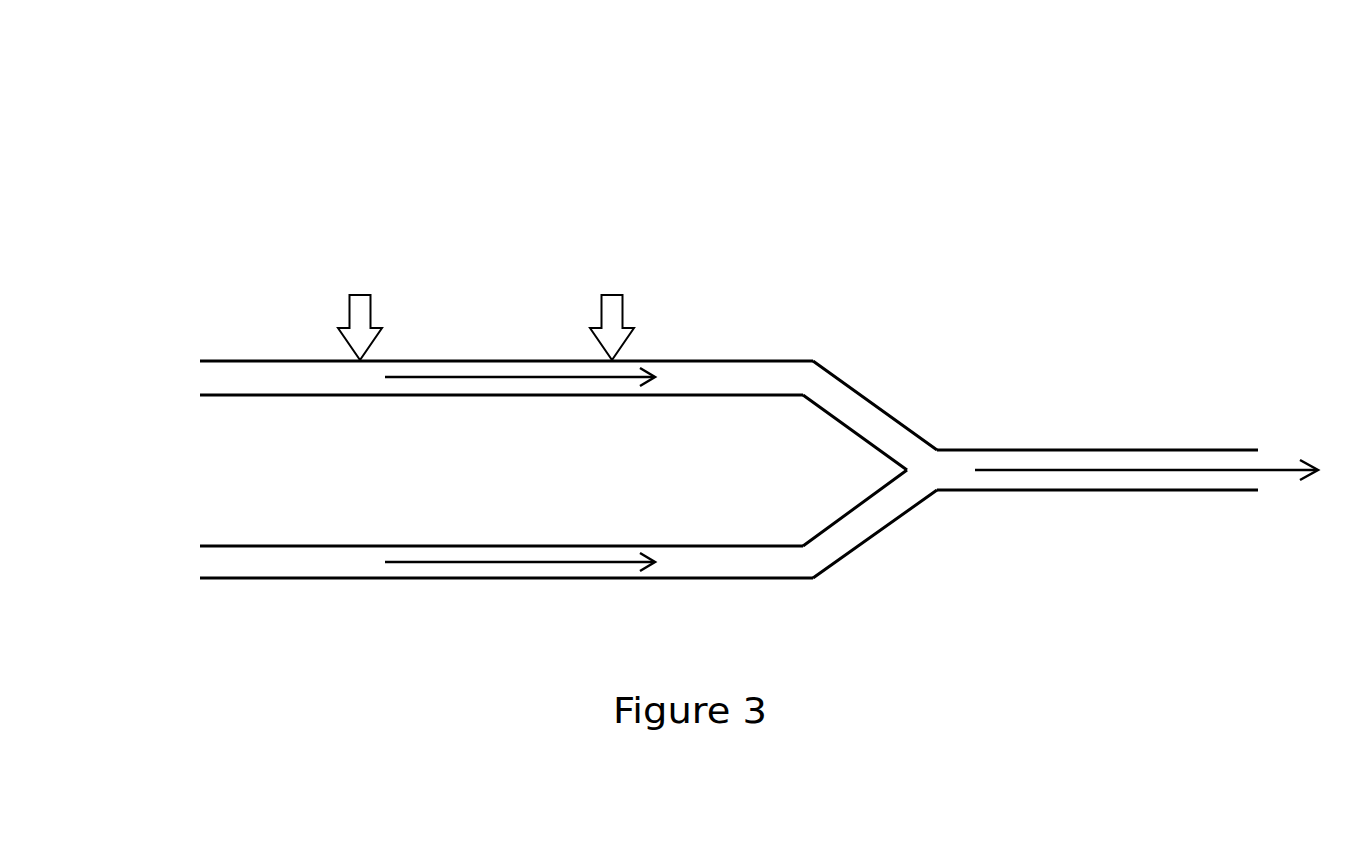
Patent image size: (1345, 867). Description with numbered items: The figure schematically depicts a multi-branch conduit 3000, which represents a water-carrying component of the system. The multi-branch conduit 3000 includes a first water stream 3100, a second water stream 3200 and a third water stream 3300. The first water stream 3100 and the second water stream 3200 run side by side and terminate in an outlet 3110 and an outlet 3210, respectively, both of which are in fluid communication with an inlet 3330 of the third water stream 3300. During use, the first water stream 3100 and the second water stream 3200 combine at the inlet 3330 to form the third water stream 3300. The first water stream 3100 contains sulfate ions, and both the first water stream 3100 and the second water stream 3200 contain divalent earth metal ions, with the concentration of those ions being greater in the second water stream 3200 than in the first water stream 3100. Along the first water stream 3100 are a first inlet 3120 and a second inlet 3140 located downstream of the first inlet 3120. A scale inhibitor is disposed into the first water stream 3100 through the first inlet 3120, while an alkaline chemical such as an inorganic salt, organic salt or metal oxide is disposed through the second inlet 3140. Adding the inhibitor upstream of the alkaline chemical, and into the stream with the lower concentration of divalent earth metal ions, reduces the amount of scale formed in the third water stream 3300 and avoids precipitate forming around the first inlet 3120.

The multi-branch conduit 3000 is at (1118, 183).
The first water stream 3100 is at (238, 358).
The outlet 3110 is at (835, 398).
The first inlet 3120 is at (360, 292).
The second inlet 3140 is at (612, 292).
The second water stream 3200 is at (238, 543).
The outlet 3210 is at (835, 542).
The third water stream 3300 is at (1153, 448).
The inlet 3330 is at (952, 473).